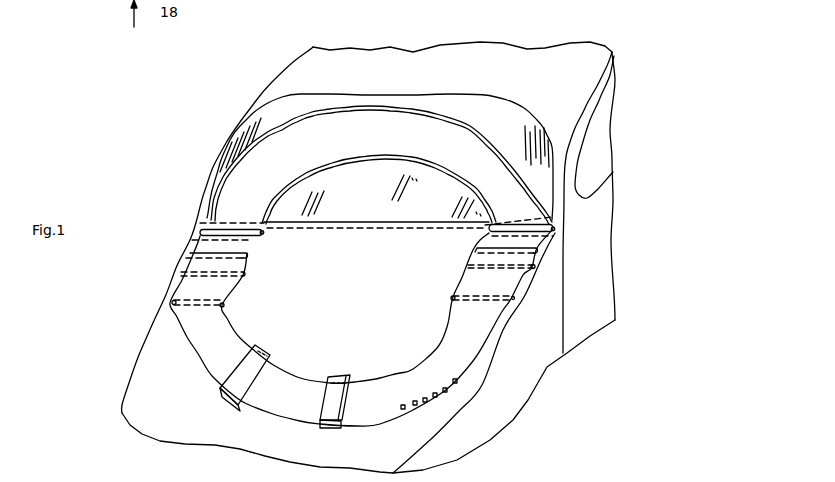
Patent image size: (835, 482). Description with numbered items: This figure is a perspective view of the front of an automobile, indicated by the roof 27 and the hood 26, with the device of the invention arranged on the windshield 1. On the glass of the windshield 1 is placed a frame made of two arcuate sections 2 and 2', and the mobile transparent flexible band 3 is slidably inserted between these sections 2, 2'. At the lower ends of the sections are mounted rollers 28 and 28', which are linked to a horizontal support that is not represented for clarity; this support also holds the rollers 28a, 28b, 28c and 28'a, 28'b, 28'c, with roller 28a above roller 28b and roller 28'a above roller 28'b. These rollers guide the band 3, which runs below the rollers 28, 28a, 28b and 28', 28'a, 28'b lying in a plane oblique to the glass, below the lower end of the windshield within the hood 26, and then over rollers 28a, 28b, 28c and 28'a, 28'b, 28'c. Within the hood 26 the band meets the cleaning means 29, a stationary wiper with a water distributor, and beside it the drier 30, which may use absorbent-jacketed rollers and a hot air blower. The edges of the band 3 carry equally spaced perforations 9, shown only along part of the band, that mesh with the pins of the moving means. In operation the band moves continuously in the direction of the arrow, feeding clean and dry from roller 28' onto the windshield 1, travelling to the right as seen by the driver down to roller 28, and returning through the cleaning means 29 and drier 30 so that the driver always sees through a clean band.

The windshield 1 is at (502, 120).
The arcuate section 2 is at (375, 155).
The arcuate section 2' is at (336, 179).
The transparent flexible band 3 is at (343, 145).
The perforations 9 is at (450, 390).
The hood 26 is at (158, 380).
The roof 27 is at (432, 65).
The roller 28 is at (208, 207).
The roller 28a is at (200, 257).
The roller 28b is at (190, 276).
The roller 28c is at (187, 308).
The roller 28' is at (544, 239).
The roller 28'a is at (541, 264).
The roller 28'b is at (516, 293).
The roller 28'c is at (499, 327).
The cleaning means 29 is at (240, 385).
The drier 30 is at (340, 400).